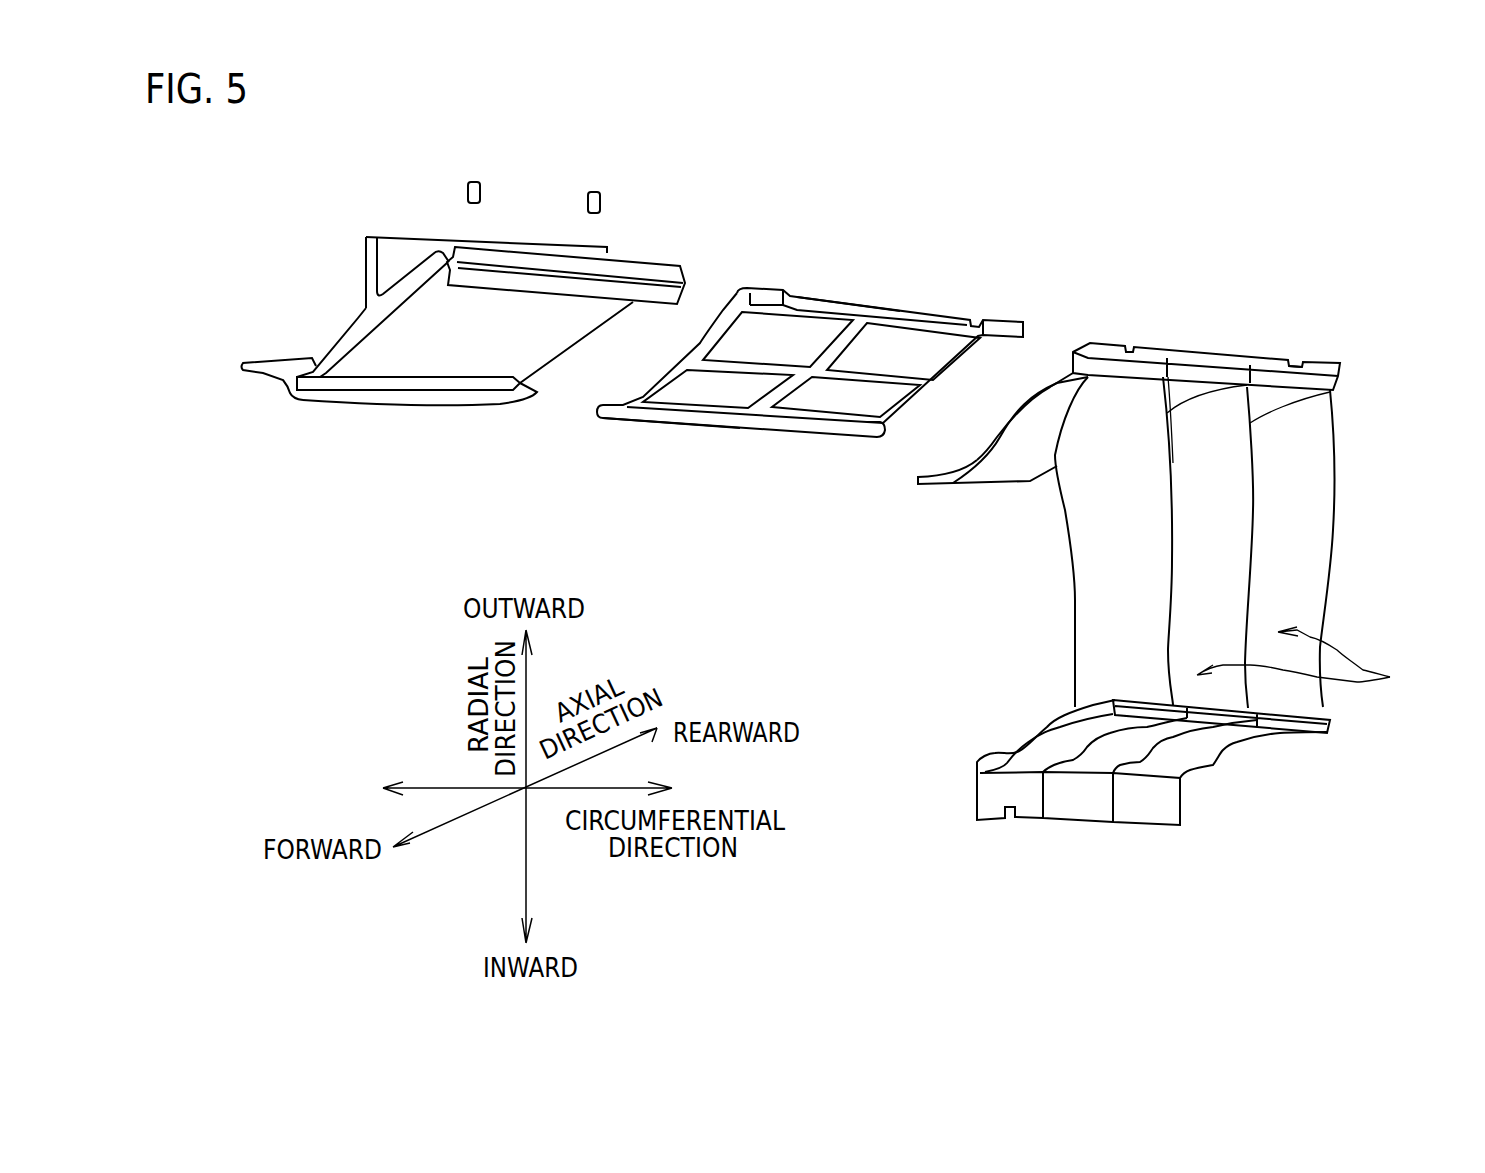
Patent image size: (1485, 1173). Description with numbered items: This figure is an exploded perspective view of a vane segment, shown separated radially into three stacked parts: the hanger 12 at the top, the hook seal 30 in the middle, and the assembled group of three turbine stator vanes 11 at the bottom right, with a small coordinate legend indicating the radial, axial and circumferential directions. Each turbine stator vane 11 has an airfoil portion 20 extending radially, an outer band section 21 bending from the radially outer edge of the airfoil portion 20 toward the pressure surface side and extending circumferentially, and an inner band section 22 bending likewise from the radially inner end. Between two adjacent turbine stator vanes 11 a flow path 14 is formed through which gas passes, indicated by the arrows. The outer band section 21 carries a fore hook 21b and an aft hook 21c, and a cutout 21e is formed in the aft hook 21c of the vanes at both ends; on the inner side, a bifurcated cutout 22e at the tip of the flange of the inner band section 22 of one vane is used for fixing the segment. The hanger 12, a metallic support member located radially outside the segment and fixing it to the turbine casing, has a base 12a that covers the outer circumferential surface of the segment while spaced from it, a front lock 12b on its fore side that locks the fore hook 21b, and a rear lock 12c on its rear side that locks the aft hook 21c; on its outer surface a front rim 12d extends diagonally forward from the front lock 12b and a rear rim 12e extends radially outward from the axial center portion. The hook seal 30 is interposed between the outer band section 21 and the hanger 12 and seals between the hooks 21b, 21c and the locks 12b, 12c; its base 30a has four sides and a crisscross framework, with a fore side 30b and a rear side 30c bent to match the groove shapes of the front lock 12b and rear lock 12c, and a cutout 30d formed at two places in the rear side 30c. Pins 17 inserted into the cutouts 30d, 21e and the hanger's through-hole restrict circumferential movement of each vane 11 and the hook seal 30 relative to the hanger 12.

The turbine stator vane 11 is at (1333, 525).
The hanger 12 is at (462, 322).
The base 12a is at (427, 347).
The front lock 12b is at (300, 397).
The rear lock 12c is at (660, 270).
The front rim 12d is at (258, 360).
The rear rim 12e is at (392, 240).
The flow path 14 is at (1309, 660).
The pin 17 is at (475, 182).
The airfoil portion 20 is at (1153, 566).
The outer band section 21 is at (1112, 404).
The fore hook 21b is at (913, 484).
The aft hook 21c is at (1100, 347).
The cutout 21e is at (1130, 348).
The inner band section 22 is at (1153, 770).
The bifurcated cutout 22e is at (1008, 819).
The hook seal 30 is at (810, 350).
The base 30a is at (817, 378).
The fore side 30b is at (680, 413).
The rear side 30c is at (866, 303).
The cutout 30d is at (790, 292).